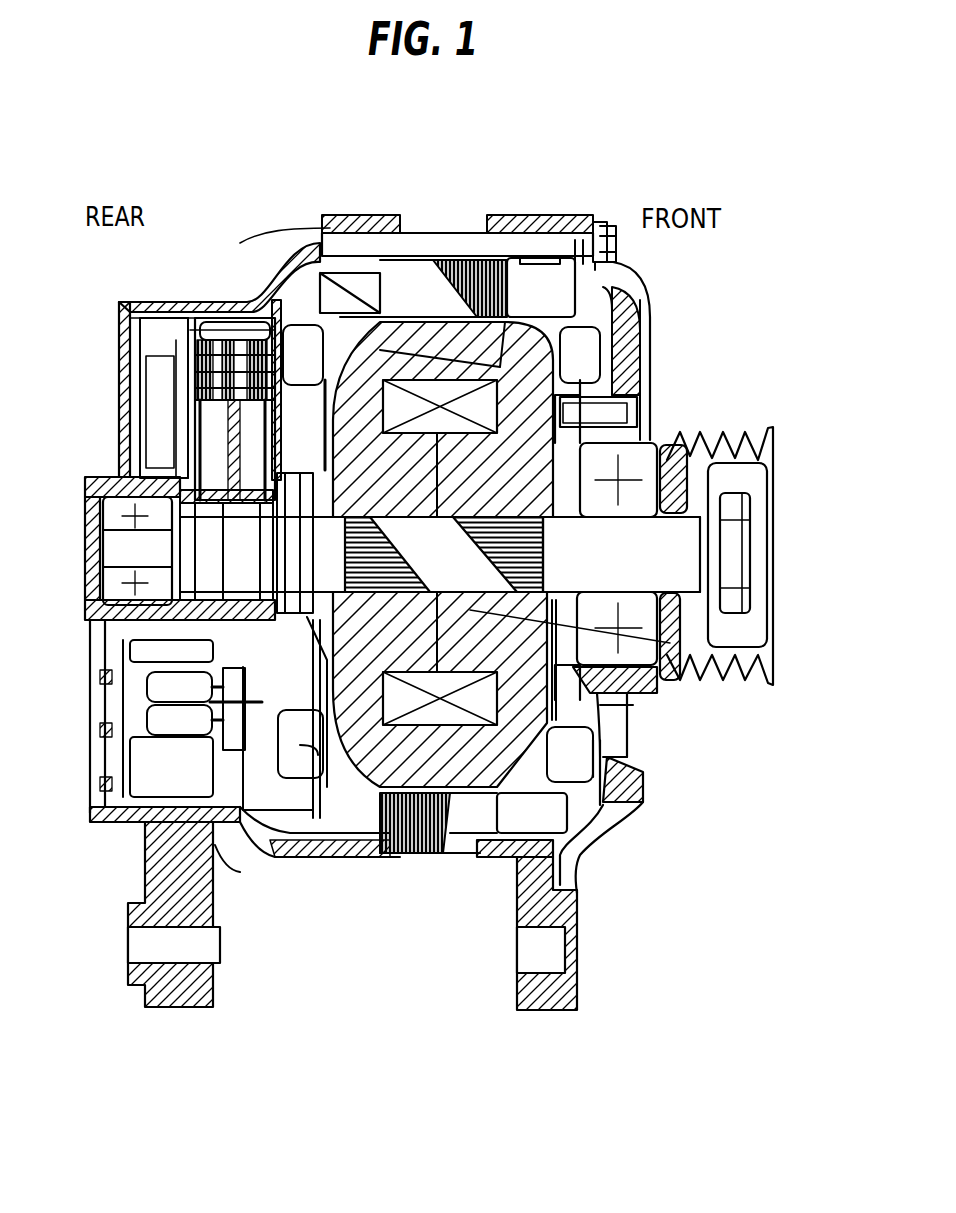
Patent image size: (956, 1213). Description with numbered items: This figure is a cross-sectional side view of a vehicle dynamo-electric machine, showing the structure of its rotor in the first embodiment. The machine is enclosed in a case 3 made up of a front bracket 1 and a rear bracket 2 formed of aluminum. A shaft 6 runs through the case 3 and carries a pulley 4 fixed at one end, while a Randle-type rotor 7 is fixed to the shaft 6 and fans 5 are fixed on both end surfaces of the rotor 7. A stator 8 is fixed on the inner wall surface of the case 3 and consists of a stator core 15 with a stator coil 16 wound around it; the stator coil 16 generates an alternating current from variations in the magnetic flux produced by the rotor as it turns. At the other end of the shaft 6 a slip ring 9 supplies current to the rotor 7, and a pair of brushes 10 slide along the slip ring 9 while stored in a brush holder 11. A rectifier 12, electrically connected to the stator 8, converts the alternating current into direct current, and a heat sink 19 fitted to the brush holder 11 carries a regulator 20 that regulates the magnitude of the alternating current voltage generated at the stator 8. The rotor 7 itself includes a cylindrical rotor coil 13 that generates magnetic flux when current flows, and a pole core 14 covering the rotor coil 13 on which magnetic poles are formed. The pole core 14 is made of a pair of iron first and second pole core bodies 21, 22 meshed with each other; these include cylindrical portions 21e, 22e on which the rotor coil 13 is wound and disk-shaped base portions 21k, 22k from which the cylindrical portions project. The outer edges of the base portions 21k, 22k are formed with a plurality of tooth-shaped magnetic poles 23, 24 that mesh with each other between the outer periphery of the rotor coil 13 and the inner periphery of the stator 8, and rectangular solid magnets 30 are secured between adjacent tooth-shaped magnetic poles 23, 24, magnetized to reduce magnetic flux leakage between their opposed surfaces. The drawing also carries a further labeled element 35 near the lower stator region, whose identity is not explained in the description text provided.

The front bracket 1 is at (494, 215).
The rear bracket 2 is at (396, 215).
The case 3 is at (478, 166).
The pulley 4 is at (773, 447).
The fans 5 is at (280, 787).
The shaft 6 is at (700, 540).
The Randle-type rotor 7 is at (692, 727).
The stator 8 is at (522, 166).
The slip ring 9 is at (200, 546).
The brushes 10 is at (205, 442).
The brush holder 11 is at (207, 318).
The rectifier 12 is at (142, 703).
The rotor coil 13 is at (500, 708).
The pole core 14 is at (480, 745).
The stator core 15 is at (482, 268).
The stator coil 16 is at (537, 280).
The heat sink 19 is at (148, 402).
The regulator 20 is at (187, 362).
The first pole core body 21 is at (382, 795).
The cylindrical portion 21e is at (357, 787).
The base portion 21k is at (300, 795).
The second pole core body 22 is at (518, 832).
The cylindrical portion 22e is at (560, 675).
The base portion 22k is at (548, 712).
The tooth-shaped magnetic poles 23 is at (482, 787).
The tooth-shaped magnetic poles 24 is at (430, 790).
The magnets 30 is at (380, 300).
The bolt 35 is at (457, 790).